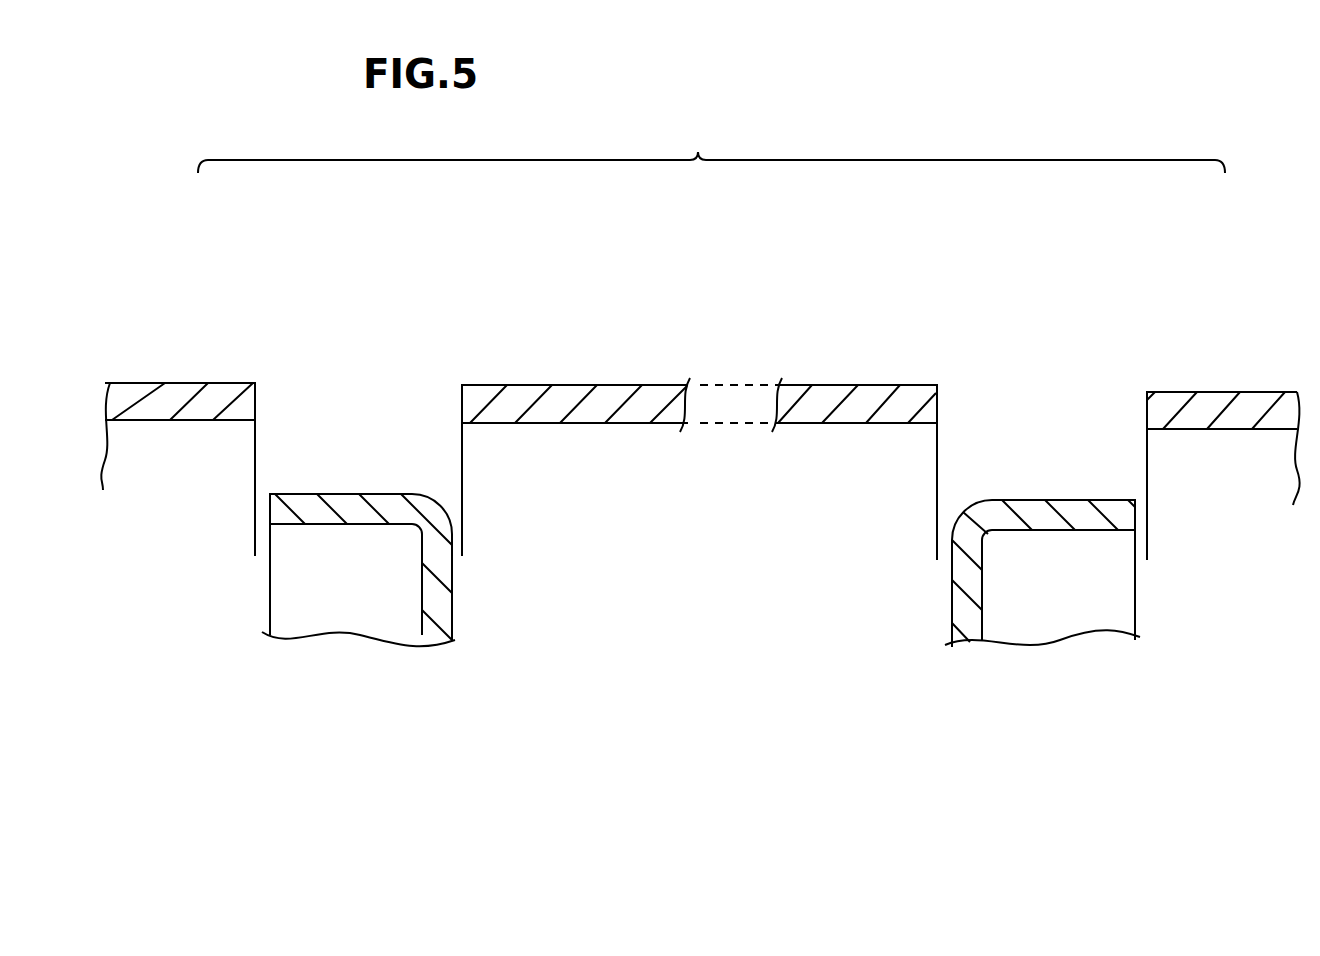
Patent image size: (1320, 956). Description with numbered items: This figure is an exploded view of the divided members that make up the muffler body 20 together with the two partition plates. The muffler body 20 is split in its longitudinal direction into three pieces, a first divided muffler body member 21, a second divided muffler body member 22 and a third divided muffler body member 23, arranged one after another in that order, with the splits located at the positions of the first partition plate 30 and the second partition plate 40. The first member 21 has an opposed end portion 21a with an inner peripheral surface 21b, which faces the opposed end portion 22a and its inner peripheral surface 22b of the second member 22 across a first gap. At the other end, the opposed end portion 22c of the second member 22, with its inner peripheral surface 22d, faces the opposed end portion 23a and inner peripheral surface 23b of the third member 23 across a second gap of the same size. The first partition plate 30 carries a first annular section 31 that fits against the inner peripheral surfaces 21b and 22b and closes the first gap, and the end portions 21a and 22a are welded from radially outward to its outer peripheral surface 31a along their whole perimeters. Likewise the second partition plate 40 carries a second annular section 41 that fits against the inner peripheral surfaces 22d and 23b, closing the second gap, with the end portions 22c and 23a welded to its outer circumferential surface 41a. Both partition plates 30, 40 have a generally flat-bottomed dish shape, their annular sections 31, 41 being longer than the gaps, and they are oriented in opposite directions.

The muffler body 20 is at (711, 149).
The first divided muffler body member 21 is at (194, 366).
The opposed end portion of the first divided muffler body member 21a is at (228, 392).
The inner peripheral surface of end portion 21a 21b is at (238, 422).
The second divided muffler body member 22 is at (699, 368).
The opposed end portion of the second divided muffler body member 22a is at (480, 395).
The inner peripheral surface of end portion 22a 22b is at (497, 425).
The opposed end portion of the second divided muffler body member 22c is at (912, 397).
The inner peripheral surface of end portion 22c 22d is at (915, 427).
The third divided muffler body member 23 is at (1218, 372).
The opposed end portion of the third divided muffler body member 23a is at (1175, 390).
The inner peripheral surface of end portion 23a 23b is at (1185, 430).
The first partition plate 30 is at (396, 529).
The first annular section 31 is at (361, 526).
The outer peripheral surface of the first annular section 31a is at (378, 495).
The second partition plate 40 is at (999, 533).
The second annular section 41 is at (1043, 531).
The outer circumferential surface of the second annular section 41a is at (1068, 500).